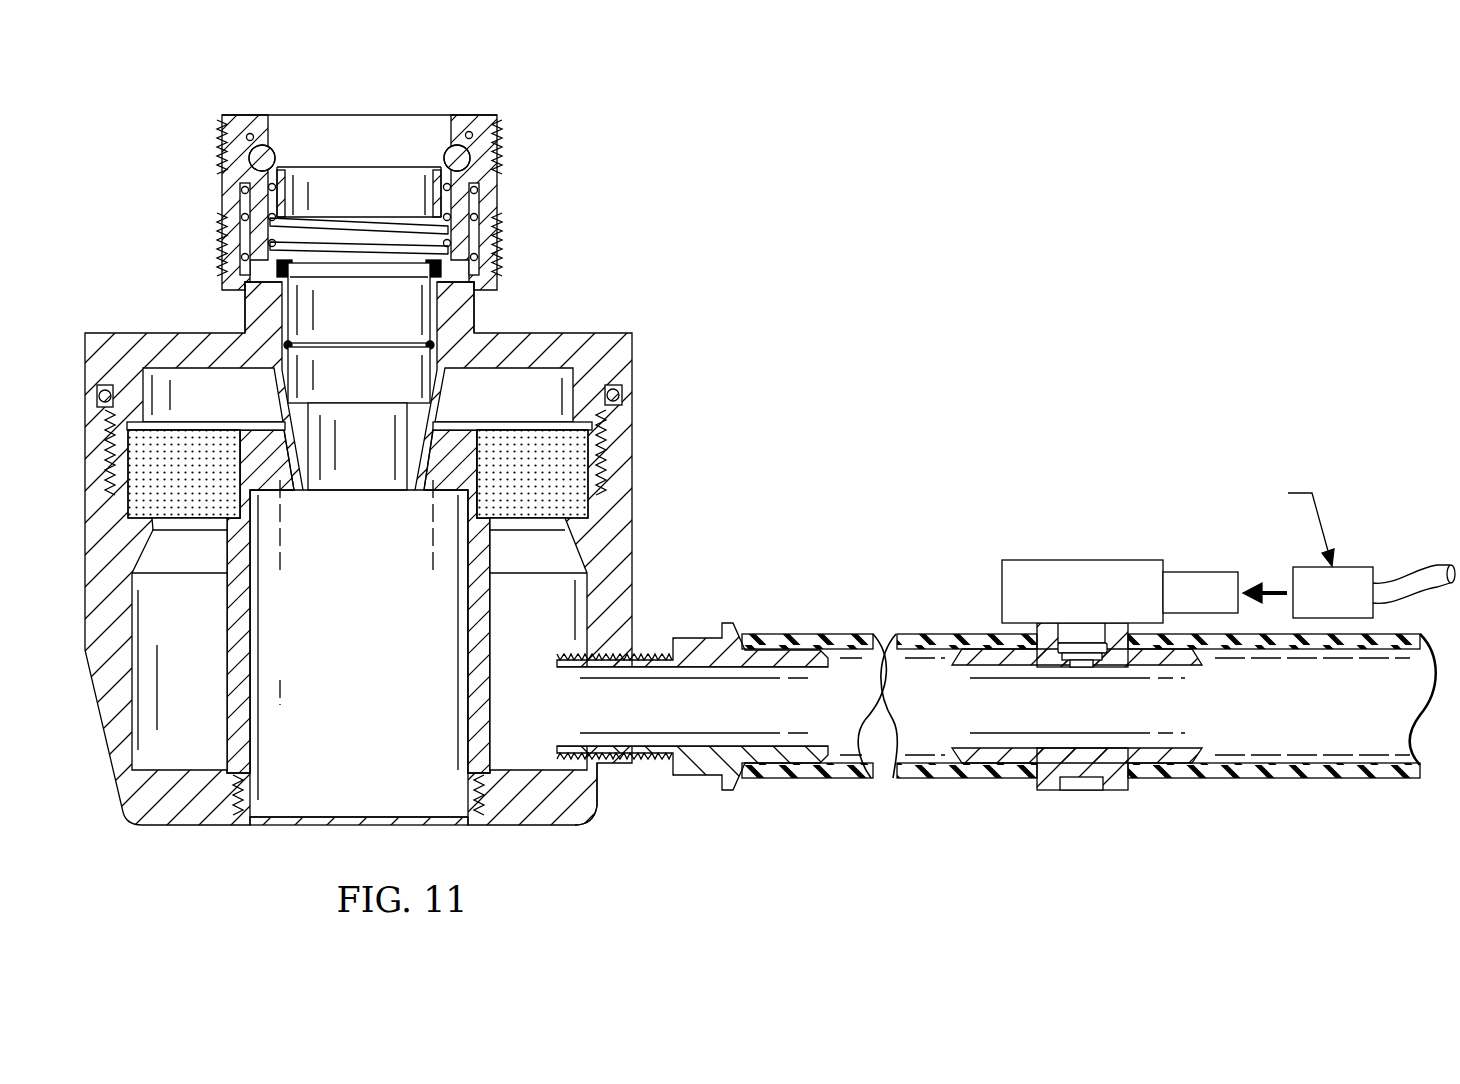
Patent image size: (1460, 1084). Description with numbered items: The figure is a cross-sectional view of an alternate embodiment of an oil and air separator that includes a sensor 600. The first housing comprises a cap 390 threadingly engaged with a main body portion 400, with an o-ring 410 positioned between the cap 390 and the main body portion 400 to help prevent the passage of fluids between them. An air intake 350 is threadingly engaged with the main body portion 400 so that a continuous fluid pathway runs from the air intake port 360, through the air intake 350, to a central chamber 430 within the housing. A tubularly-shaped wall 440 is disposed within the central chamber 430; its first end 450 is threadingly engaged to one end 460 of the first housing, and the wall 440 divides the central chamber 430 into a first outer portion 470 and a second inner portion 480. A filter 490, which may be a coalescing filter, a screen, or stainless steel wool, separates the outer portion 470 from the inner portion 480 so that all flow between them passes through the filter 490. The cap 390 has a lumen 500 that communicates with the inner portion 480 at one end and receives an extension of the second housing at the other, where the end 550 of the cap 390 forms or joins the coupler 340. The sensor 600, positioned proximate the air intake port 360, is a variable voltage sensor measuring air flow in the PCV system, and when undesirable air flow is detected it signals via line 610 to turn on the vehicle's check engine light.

The coupler 340 is at (503, 115).
The air intake 350 is at (702, 768).
The air intake port 360 is at (830, 707).
The cap 390 is at (117, 332).
The main body portion 400 is at (632, 513).
The o-ring 410 is at (624, 393).
The central chamber 430 is at (187, 383).
The tubularly-shaped barrier or wall 440 is at (252, 715).
The first end of wall 450 is at (468, 793).
The one end of first housing 460 is at (520, 827).
The first outer portion 470 is at (160, 627).
The second inner portion 480 is at (337, 680).
The filter 490 is at (508, 518).
The lumen 500 is at (272, 125).
The end of cap 550 is at (457, 115).
The sensor 600 is at (1082, 560).
The line 610 is at (1407, 573).